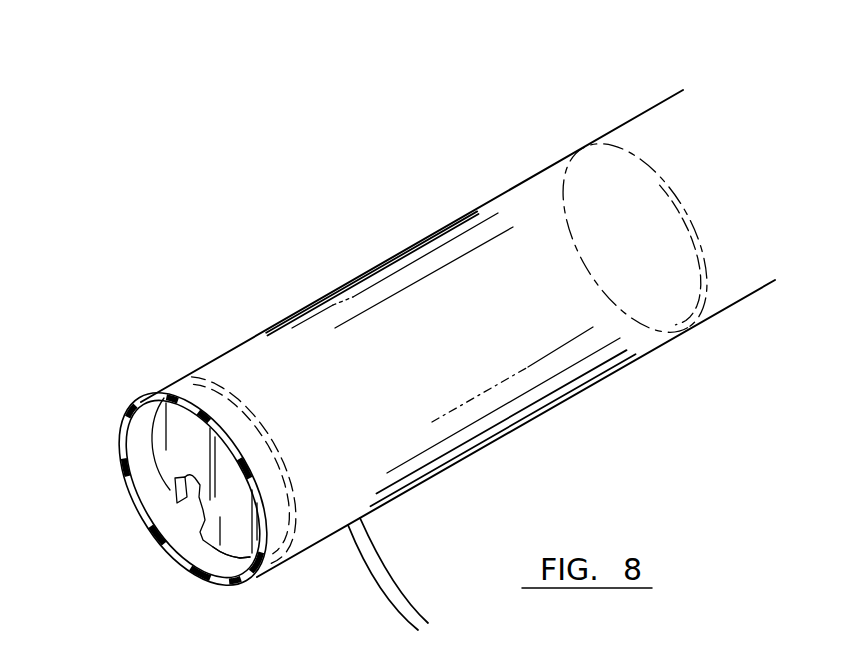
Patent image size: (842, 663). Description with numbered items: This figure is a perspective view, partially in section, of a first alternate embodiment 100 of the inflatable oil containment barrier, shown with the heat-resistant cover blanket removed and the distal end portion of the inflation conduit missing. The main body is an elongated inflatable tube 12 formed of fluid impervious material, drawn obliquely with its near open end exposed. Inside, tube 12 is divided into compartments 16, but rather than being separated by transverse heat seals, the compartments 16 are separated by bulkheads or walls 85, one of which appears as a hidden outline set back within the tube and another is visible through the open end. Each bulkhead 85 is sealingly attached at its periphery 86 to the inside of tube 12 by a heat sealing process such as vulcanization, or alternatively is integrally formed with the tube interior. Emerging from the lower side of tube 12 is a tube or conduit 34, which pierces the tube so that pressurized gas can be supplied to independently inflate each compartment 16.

The inflatable tube 12 is at (225, 352).
The compartment 16 is at (184, 524).
The tube or conduit 34 is at (384, 570).
The bulkhead 85 is at (693, 225).
The periphery 86 is at (235, 556).
The first alternate embodiment 100 is at (410, 232).